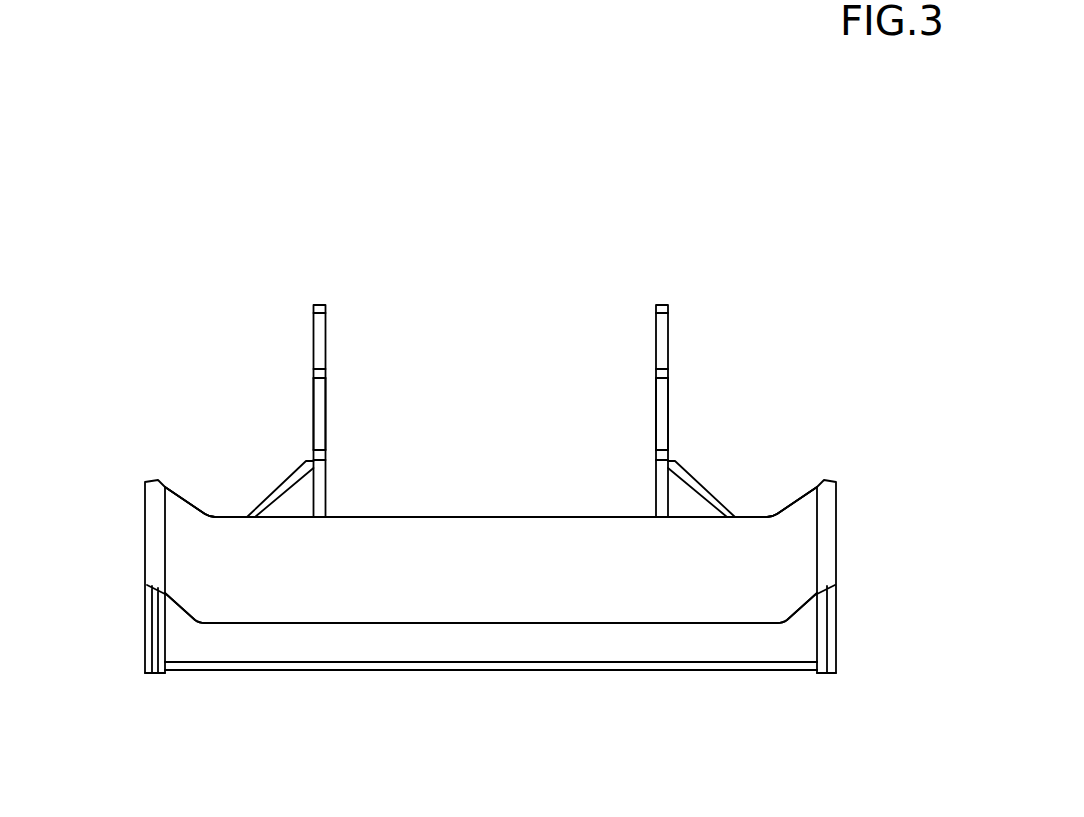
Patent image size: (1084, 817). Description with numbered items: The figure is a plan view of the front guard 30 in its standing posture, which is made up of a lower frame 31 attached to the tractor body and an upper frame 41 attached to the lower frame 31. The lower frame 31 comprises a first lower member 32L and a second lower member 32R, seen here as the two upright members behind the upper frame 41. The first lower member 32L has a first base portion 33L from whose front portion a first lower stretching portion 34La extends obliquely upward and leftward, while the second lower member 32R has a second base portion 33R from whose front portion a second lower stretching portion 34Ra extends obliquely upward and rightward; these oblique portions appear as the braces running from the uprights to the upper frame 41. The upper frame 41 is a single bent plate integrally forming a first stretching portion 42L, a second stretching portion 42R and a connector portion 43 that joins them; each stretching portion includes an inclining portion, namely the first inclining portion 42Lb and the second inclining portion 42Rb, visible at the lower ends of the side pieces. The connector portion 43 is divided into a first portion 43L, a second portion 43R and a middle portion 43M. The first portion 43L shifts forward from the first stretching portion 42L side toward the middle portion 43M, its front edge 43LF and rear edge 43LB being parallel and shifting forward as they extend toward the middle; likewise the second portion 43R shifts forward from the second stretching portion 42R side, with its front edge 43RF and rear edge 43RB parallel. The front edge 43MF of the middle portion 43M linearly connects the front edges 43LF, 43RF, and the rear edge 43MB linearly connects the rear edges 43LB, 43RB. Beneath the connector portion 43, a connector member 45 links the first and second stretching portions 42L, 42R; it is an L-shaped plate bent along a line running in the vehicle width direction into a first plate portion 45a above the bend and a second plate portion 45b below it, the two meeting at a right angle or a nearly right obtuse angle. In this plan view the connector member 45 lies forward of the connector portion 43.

The front guard 30 is at (494, 284).
The lower frame 31 is at (671, 290).
The second lower member 32R is at (313, 340).
The first lower member 32L is at (668, 340).
The second base portion 33R is at (322, 400).
The first base portion 33L is at (658, 400).
The second lower stretching portion 34Ra is at (290, 502).
The first lower stretching portion 34La is at (690, 502).
The upper frame 41 is at (614, 699).
The second stretching portion 42R is at (145, 548).
The first stretching portion 42L is at (838, 548).
The second inclining portion 42Rb is at (165, 640).
The first inclining portion 42Lb is at (815, 640).
The connector portion 43 is at (458, 502).
The second portion 43R is at (183, 512).
The first portion 43L is at (800, 512).
The middle portion 43M is at (532, 530).
The rear edge of the middle portion 43MB is at (600, 517).
The front edge of the middle portion 43MF is at (694, 623).
The rear edge of the second portion 43RB is at (173, 492).
The rear edge of the first portion 43LB is at (810, 490).
The front edge of the second portion 43RF is at (175, 612).
The front edge of the first portion 43LF is at (808, 610).
The connector member 45 is at (447, 683).
The first plate portion 45a is at (522, 650).
The second plate portion 45b is at (323, 672).